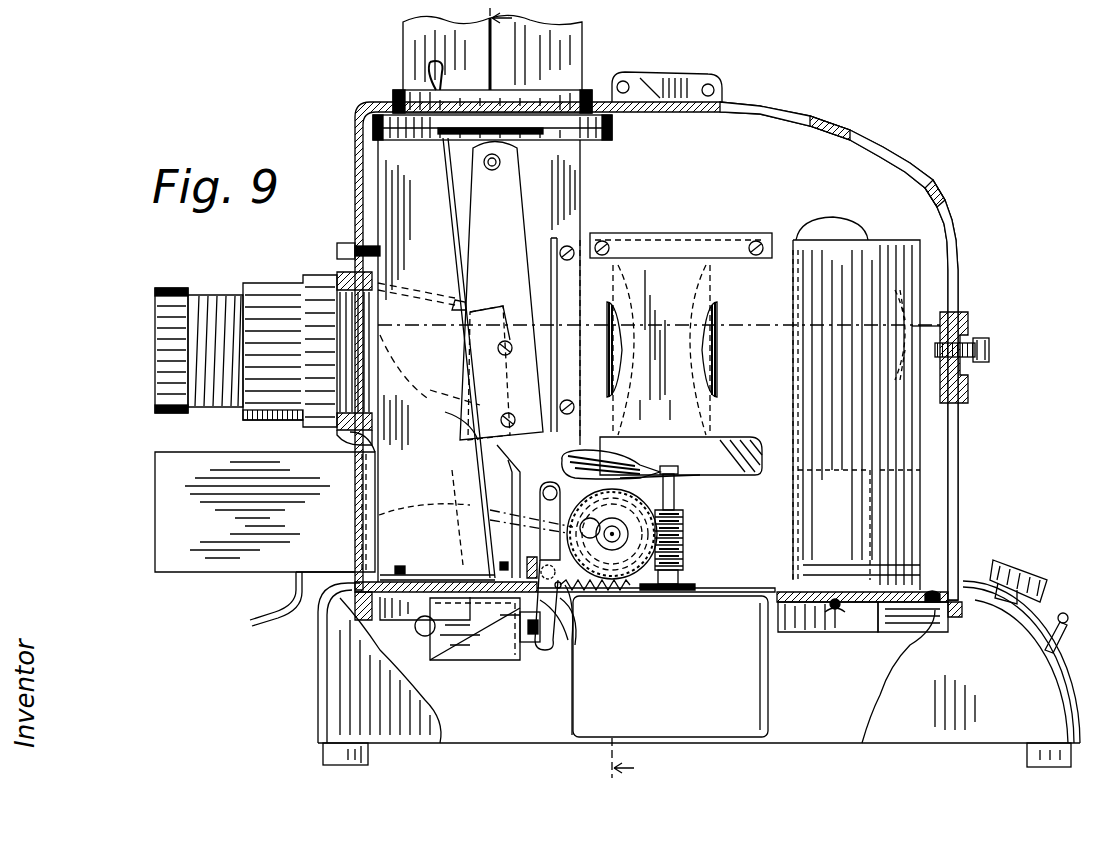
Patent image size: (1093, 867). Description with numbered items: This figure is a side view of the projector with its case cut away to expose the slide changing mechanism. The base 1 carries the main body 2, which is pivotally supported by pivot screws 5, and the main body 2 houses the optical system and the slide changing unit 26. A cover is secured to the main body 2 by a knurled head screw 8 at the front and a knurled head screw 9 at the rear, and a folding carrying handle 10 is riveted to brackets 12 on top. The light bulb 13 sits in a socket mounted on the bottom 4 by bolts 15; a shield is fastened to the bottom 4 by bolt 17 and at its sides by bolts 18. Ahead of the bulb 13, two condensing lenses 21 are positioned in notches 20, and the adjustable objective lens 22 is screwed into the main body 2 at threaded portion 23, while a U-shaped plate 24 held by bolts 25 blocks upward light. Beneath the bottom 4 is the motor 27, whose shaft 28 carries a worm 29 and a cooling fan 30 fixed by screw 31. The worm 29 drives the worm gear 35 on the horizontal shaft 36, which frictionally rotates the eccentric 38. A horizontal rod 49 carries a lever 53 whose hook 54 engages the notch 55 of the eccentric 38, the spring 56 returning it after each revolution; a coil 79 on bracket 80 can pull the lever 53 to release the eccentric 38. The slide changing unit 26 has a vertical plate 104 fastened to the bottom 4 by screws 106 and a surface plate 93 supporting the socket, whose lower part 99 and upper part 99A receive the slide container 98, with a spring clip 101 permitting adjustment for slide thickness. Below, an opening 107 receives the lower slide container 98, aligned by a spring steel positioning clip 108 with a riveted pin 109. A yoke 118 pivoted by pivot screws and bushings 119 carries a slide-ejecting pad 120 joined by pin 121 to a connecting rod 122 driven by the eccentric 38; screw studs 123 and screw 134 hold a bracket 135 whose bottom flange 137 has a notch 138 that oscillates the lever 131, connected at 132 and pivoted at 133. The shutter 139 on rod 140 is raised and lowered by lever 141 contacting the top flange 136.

The base 1 is at (316, 690).
The main body 2 is at (960, 440).
The bottom 4 is at (805, 634).
The pivot screws 5 is at (546, 640).
The knurled head screw 8 is at (337, 248).
The knurled head screw 9 is at (990, 349).
The folding carrying handle 10 is at (690, 74).
The brackets 12 is at (575, 394).
The light bulb 13 is at (830, 196).
The bolts 15 is at (840, 614).
The bolt 17 is at (935, 590).
The bolts 18 is at (570, 388).
The notches 20 is at (622, 365).
The condensing lenses 21 is at (680, 410).
The adjustable objective lens 22 is at (218, 293).
The threaded portion 23 is at (335, 290).
The U-shaped plate 24 is at (672, 230).
The bolts 25 is at (742, 218).
The slide changing unit 26 is at (405, 188).
The motor 27 is at (768, 700).
The shaft 28 is at (680, 580).
The worm 29 is at (683, 522).
The cooling fan 30 is at (720, 455).
The screw 31 is at (670, 462).
The worm gear 35 is at (620, 540).
The horizontal shaft 36 is at (630, 560).
The eccentric 38 is at (625, 572).
The horizontal rod 49 is at (548, 488).
The lever 53 is at (575, 600).
The hook 54 is at (524, 512).
The notch 55 is at (586, 528).
The spring 56 is at (595, 594).
The coil 79 is at (490, 660).
The bracket 80 is at (440, 665).
The surface plate 93 is at (612, 142).
The slide container 98 is at (405, 42).
The lower part of socket 99 is at (375, 124).
The upper part of socket 99A is at (393, 92).
The spring clip 101 is at (428, 66).
The vertical plate 104 is at (582, 195).
The screws 106 is at (420, 628).
The opening 107 is at (350, 442).
The spring steel positioning clip 108 is at (258, 622).
The riveted pin 109 is at (300, 580).
The yoke 118 is at (487, 228).
The pivot screws and bushings 119 is at (492, 172).
The slide-ejecting pad 120 is at (470, 535).
The pin 121 is at (475, 508).
The connecting rod 122 is at (505, 505).
The screw studs 123 is at (512, 352).
The lever 131 is at (450, 258).
The connection point 132 is at (445, 137).
The pivot 133 is at (470, 562).
The screw 134 is at (512, 418).
The bracket 135 is at (455, 370).
The top flange 136 is at (502, 308).
The bottom flange 137 is at (440, 388).
The notch 138 is at (445, 412).
The shutter 139 is at (440, 282).
The rod 140 is at (466, 300).
The lever 141 is at (450, 305).